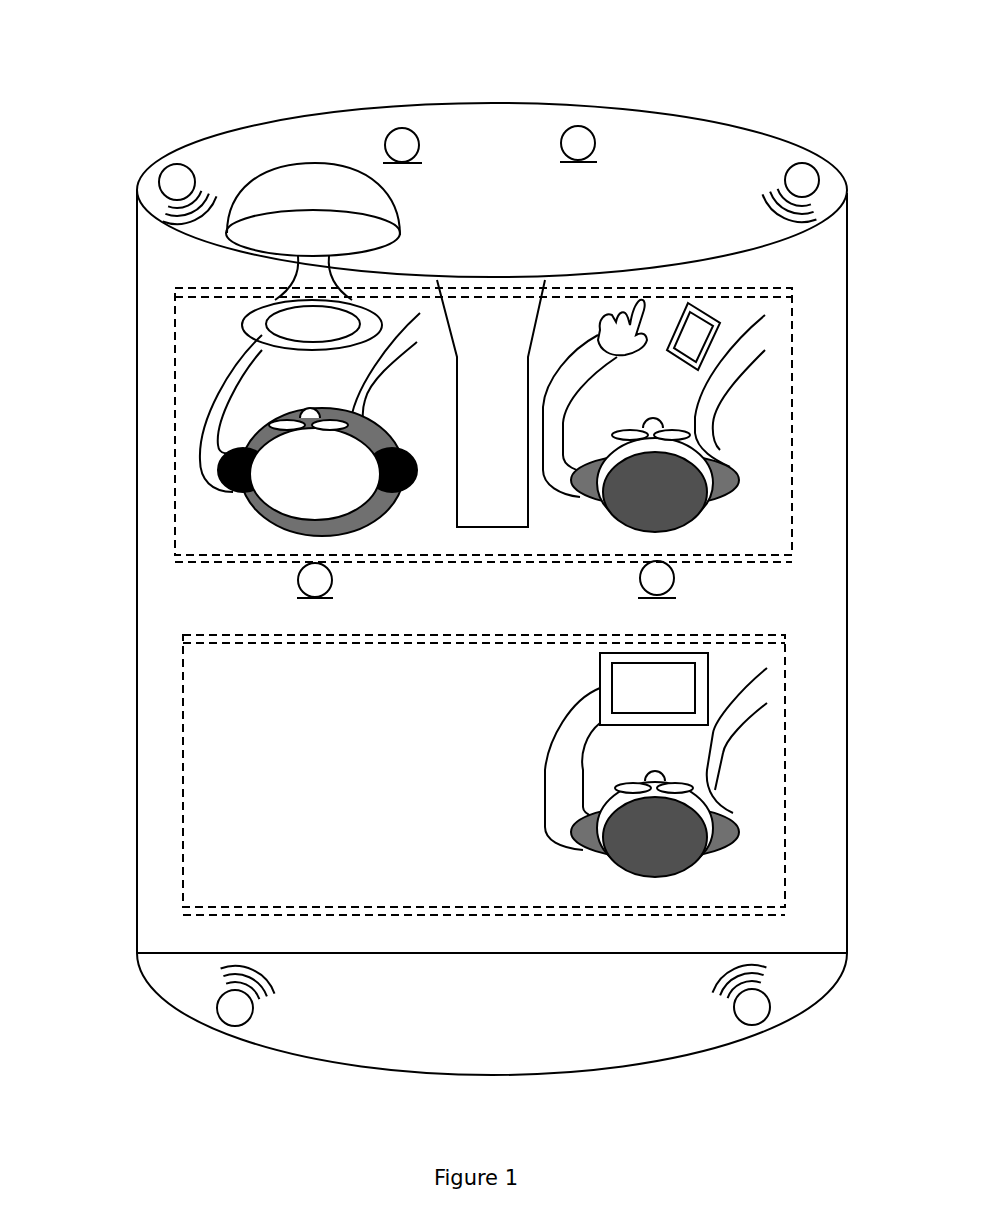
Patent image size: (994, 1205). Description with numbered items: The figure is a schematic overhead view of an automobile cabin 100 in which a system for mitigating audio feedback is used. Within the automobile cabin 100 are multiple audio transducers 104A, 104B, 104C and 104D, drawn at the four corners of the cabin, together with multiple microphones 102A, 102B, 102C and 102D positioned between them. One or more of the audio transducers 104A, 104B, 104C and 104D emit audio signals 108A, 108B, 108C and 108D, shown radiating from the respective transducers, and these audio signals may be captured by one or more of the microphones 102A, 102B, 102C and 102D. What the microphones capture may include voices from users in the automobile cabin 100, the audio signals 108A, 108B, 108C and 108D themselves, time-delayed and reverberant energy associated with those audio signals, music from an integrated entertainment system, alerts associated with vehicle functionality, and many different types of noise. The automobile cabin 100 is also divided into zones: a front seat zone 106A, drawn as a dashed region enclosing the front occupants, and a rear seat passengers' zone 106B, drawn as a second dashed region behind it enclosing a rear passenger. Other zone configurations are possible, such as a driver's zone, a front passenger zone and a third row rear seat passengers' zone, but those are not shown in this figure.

The automobile cabin 100 is at (492, 563).
The microphone 102A is at (402, 164).
The microphone 102B is at (578, 163).
The microphone 102C is at (645, 592).
The microphone 102D is at (300, 593).
The audio transducer 104A is at (172, 163).
The audio transducer 104B is at (805, 163).
The audio transducer 104C is at (758, 1025).
The audio transducer 104D is at (230, 1026).
The front seat zone 106A is at (173, 363).
The rear seat passengers' zone 106B is at (175, 705).
The audio signal 108A is at (150, 195).
The audio signal 108B is at (767, 200).
The audio signal 108C is at (723, 995).
The audio signal 108D is at (263, 997).